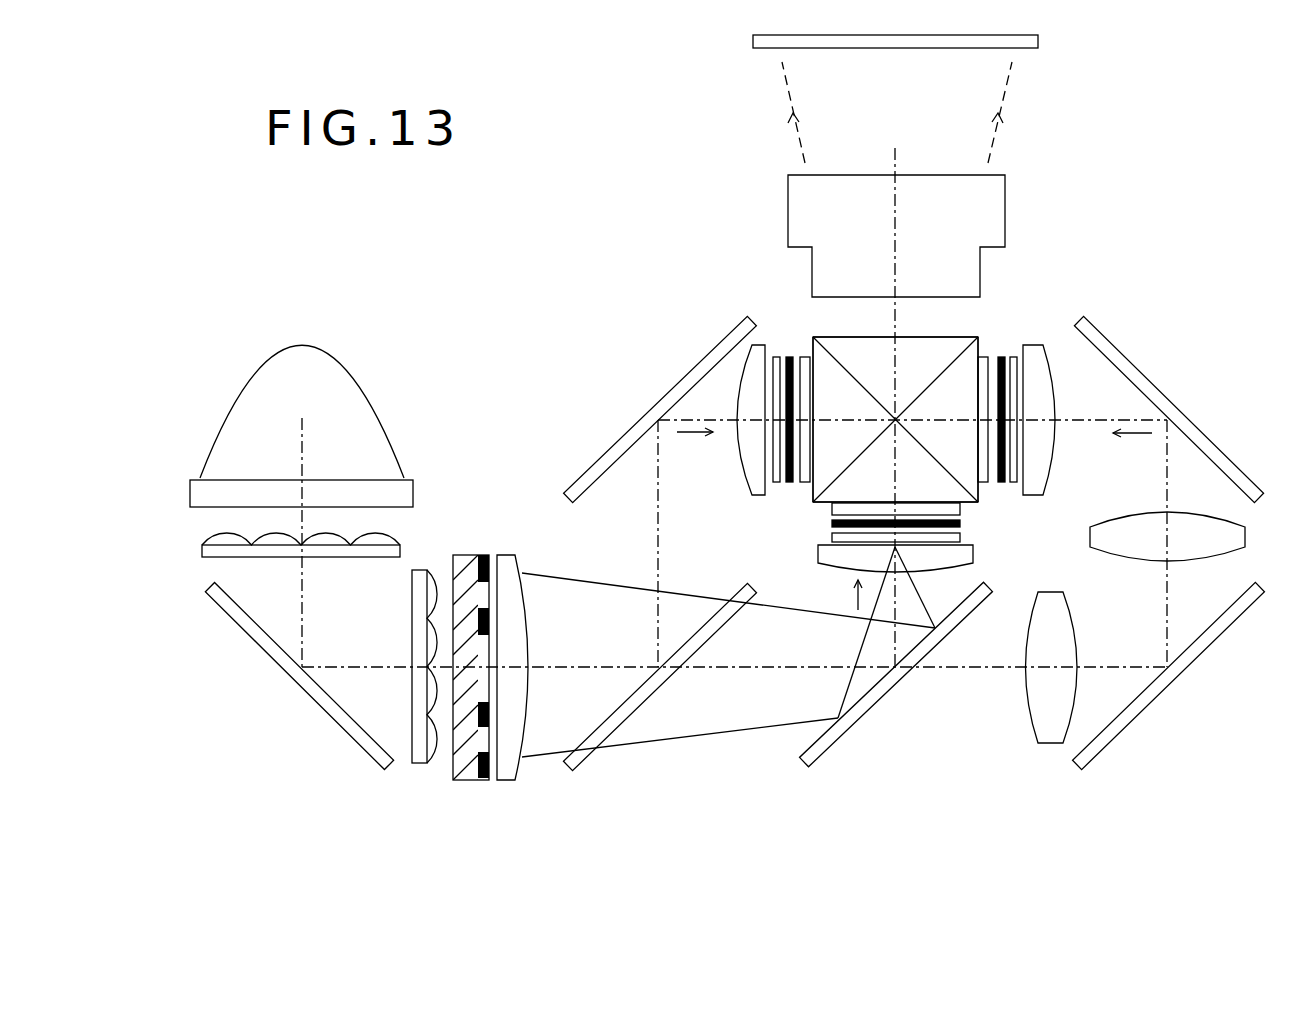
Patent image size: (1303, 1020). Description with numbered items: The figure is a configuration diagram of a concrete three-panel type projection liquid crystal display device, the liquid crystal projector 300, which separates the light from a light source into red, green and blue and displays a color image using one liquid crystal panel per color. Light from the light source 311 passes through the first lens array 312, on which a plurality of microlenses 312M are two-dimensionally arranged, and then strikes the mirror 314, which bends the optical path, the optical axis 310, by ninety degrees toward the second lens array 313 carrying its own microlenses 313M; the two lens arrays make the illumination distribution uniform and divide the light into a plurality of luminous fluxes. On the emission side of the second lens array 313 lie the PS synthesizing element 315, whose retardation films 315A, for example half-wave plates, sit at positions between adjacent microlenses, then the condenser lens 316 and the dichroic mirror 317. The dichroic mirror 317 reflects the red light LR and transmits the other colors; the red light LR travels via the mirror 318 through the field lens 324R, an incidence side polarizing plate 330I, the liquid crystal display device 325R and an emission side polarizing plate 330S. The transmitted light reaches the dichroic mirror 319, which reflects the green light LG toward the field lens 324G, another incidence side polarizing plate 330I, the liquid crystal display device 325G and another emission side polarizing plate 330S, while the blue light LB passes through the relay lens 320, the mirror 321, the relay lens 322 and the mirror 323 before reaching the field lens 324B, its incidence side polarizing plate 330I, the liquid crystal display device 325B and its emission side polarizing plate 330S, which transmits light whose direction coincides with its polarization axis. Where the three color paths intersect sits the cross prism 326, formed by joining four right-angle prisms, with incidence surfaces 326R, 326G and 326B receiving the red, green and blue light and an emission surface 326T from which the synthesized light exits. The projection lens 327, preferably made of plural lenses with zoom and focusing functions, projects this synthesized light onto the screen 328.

The liquid crystal projector 300 is at (958, 833).
The optical axis 310 is at (275, 451).
The light source 311 is at (256, 362).
The first lens array 312 is at (268, 540).
The microlens 312M is at (216, 535).
The second lens array 313 is at (393, 703).
The microlens 313M is at (435, 768).
The mirror 314 is at (232, 630).
The PS synthesizing element 315 is at (496, 697).
The retardation film 315A is at (482, 785).
The condenser lens 316 is at (520, 787).
The dichroic mirror 317 is at (583, 765).
The mirror 318 is at (590, 467).
The dichroic mirror 319 is at (818, 772).
The relay lens 320 is at (1050, 745).
The mirror 321 is at (1095, 758).
The relay lens 322 is at (1190, 560).
The mirror 323 is at (1205, 435).
The field lens 324R is at (762, 345).
The field lens 324G is at (820, 553).
The field lens 324B is at (1053, 472).
The liquid crystal display device 325R is at (790, 357).
The liquid crystal display device 325G is at (832, 536).
The liquid crystal display device 325B is at (1014, 484).
The cross prism 326 is at (896, 384).
The incidence surface 326R is at (813, 337).
The incidence surface 326G is at (835, 502).
The incidence surface 326B is at (982, 490).
The emission surface 326T is at (960, 337).
The projection lens 327 is at (1007, 186).
The screen 328 is at (1040, 42).
The incidence side polarizing plate 330I is at (785, 357).
The emission side polarizing plate 330S is at (832, 509).
The red light LR is at (693, 435).
The green light LG is at (853, 604).
The blue light LB is at (1138, 436).